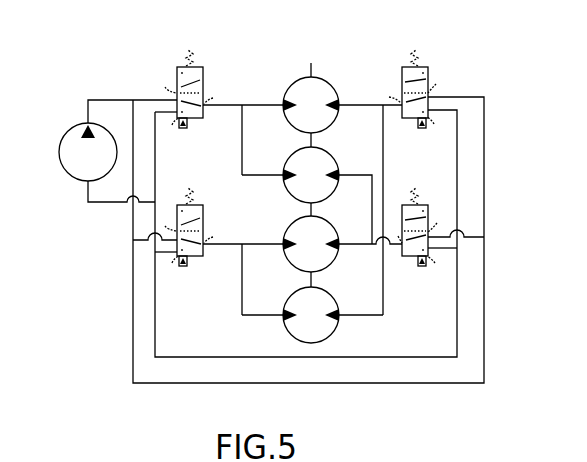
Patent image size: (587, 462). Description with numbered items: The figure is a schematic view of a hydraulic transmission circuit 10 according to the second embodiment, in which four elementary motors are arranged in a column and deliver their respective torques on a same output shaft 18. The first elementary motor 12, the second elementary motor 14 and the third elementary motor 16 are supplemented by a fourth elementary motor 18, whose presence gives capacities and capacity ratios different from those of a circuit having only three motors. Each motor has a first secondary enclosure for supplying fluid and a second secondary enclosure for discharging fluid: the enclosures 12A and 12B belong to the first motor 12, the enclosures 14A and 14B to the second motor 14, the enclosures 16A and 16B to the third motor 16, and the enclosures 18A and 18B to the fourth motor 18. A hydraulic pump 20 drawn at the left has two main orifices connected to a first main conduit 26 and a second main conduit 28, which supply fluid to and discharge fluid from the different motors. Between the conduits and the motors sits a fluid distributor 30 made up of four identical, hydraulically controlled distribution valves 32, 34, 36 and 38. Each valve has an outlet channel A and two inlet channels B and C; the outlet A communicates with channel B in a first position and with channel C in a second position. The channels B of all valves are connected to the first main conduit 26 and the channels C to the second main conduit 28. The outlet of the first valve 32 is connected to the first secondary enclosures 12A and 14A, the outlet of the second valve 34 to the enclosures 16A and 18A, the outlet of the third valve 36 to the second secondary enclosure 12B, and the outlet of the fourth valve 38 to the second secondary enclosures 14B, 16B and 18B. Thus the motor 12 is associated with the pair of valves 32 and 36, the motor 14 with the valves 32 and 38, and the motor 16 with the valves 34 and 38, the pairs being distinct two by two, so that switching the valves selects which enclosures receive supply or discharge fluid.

The circuit 10 is at (116, 66).
The first elementary motor 12 is at (311, 105).
The second elementary motor 14 is at (311, 181).
The third elementary motor 16 is at (311, 251).
The fourth elementary motor 18 is at (328, 66).
The hydraulic pump 20 is at (88, 152).
The first main conduit 26 is at (90, 98).
The second main conduit 28 is at (97, 205).
The fluid distributor 30 is at (110, 280).
The first distribution valve 32 is at (205, 75).
The second distribution valve 34 is at (205, 213).
The third distribution valve 36 is at (402, 66).
The fourth distribution valve 38 is at (403, 205).
The first secondary enclosure of the first elementary motor 12A is at (283, 101).
The second secondary enclosure of the first elementary motor 12B is at (340, 101).
The first secondary enclosure of the second elementary motor 14A is at (283, 171).
The second secondary enclosure of the second elementary motor 14B is at (340, 171).
The first secondary enclosure of the third elementary motor 16A is at (283, 240).
The second secondary enclosure of the third elementary motor 16B is at (340, 240).
The first secondary enclosure of the fourth elementary motor 18A is at (283, 311).
The second secondary enclosure of the fourth elementary motor 18B is at (340, 311).